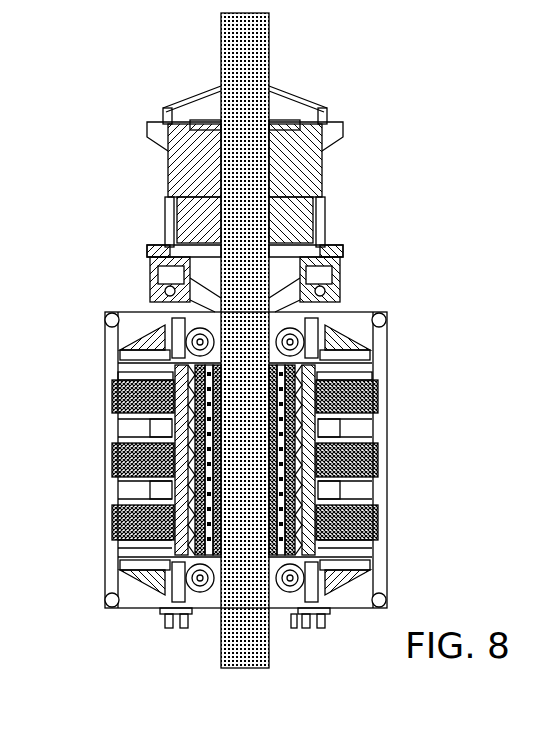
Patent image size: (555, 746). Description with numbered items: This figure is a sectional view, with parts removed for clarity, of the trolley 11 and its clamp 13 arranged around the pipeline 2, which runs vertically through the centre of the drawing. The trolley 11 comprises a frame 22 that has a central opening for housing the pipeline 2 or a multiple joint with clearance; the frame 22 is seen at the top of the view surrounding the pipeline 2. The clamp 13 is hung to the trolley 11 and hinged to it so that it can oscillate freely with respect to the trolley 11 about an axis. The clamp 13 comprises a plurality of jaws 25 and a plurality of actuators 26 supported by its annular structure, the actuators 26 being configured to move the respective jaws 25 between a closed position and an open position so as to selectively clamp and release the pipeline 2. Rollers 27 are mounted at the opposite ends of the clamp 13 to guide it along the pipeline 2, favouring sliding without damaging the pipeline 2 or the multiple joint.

The pipeline 2 is at (218, 633).
The trolley 11 is at (134, 88).
The clamp 13 is at (96, 618).
The frame 22 is at (300, 177).
The jaws 25 is at (130, 415).
The actuators 26 is at (120, 378).
The rollers 27 is at (152, 310).